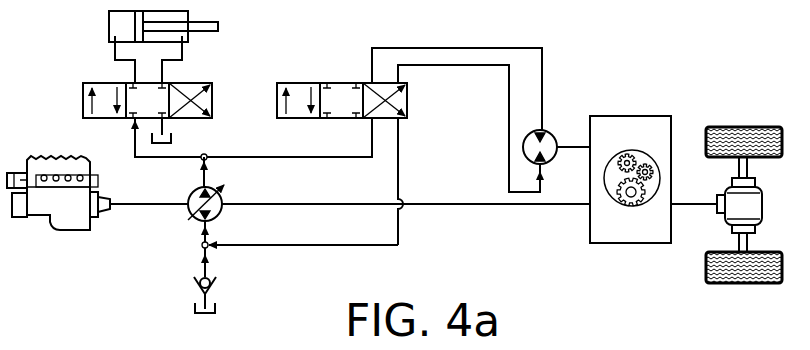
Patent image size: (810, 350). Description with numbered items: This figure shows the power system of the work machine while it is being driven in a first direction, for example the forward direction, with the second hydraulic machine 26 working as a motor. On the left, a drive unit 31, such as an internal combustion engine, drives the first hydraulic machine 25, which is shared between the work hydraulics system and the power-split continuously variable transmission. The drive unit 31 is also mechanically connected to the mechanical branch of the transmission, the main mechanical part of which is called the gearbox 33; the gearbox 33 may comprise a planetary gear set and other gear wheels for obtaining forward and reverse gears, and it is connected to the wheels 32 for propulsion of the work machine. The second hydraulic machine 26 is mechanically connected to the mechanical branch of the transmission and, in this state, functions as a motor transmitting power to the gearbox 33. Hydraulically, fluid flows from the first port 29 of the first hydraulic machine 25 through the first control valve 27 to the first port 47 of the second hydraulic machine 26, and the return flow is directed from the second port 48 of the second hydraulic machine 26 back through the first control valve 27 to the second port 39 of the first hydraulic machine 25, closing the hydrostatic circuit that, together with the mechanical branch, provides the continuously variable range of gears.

The first hydraulic machine 25 is at (197, 221).
The second hydraulic machine 26 is at (553, 133).
The first control valve 27 is at (297, 83).
The first port 29 is at (193, 183).
The drive unit 31 is at (65, 232).
The wheels 32 is at (739, 283).
The gearbox 33 is at (622, 243).
The second port 39 is at (213, 225).
The first port 47 is at (537, 165).
The second port 48 is at (535, 122).